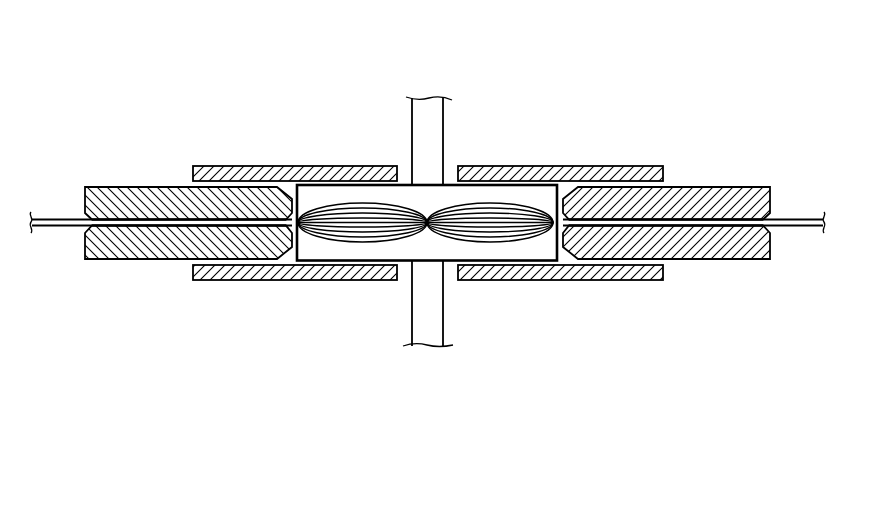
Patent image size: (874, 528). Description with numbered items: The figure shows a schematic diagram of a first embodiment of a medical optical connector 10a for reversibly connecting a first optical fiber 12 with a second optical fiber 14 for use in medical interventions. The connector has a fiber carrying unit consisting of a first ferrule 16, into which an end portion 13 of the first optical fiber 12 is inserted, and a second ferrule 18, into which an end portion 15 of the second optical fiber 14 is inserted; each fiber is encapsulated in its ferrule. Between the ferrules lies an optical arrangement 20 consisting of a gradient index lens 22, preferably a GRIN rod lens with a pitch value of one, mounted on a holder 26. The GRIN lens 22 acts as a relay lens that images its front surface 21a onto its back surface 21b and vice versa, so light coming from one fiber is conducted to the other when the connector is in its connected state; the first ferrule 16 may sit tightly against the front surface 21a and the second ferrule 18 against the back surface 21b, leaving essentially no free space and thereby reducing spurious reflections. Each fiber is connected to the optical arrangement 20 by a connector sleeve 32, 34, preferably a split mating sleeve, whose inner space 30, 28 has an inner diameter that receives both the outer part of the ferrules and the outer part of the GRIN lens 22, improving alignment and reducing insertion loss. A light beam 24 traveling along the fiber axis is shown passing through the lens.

The medical optical connector 10a is at (741, 96).
The first optical fiber 12 is at (48, 228).
The end portion of the first optical fiber 13 is at (158, 219).
The second optical fiber 14 is at (802, 228).
The end portion of the second optical fiber 15 is at (706, 219).
The first ferrule 16 is at (143, 260).
The second ferrule 18 is at (722, 260).
The optical arrangement 20 is at (405, 179).
The front surface 21a is at (316, 245).
The back surface 21b is at (538, 245).
The GRIN lens 22 is at (448, 185).
The light beam 24 is at (489, 228).
The holder 26 is at (430, 328).
The inner space 28 is at (565, 186).
The inner space 30 is at (293, 186).
The connector sleeve 32 is at (278, 272).
The connector sleeve 34 is at (655, 277).